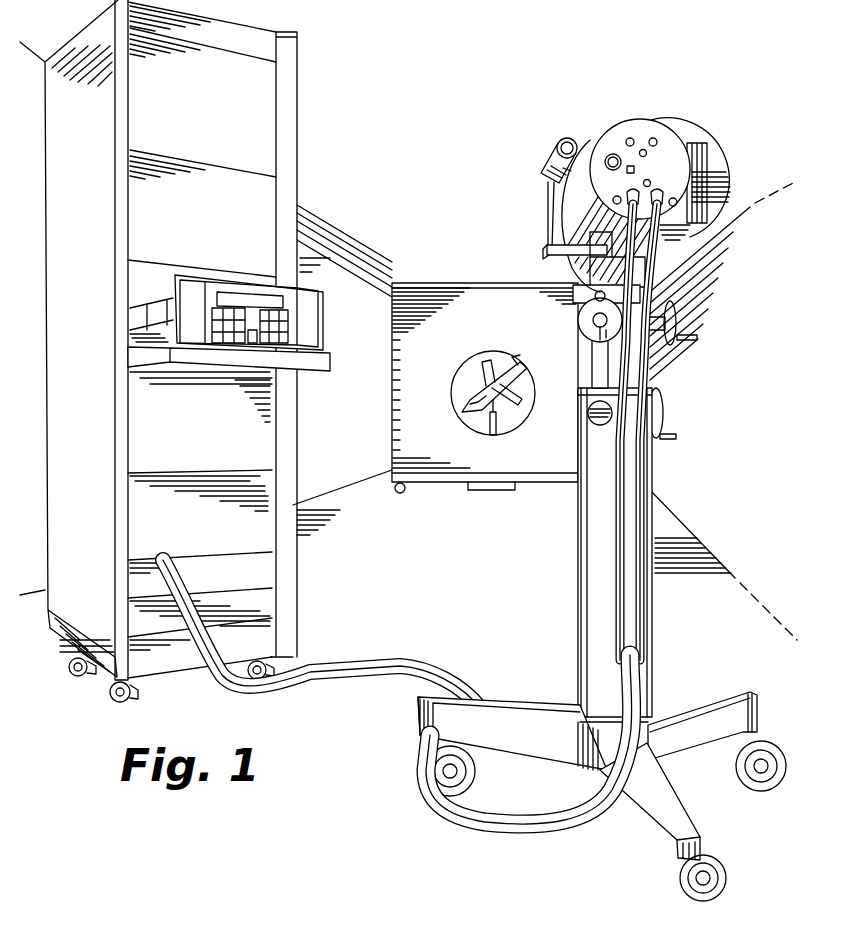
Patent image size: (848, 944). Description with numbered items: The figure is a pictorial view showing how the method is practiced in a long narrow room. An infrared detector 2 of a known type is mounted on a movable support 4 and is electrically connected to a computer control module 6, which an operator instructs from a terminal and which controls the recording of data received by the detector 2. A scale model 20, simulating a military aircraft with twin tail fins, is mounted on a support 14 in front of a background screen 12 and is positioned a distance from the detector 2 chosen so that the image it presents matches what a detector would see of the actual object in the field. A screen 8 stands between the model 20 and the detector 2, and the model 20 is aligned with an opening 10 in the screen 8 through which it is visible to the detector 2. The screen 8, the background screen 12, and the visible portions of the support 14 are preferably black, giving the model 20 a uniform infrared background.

The infrared detector 2 is at (645, 122).
The movable support 4 is at (578, 610).
The computer control module 6 is at (293, 262).
The screen 8 is at (496, 321).
The opening 10 is at (451, 397).
The background screen 12 is at (478, 417).
The support 14 is at (481, 494).
The scale model 20 is at (505, 430).